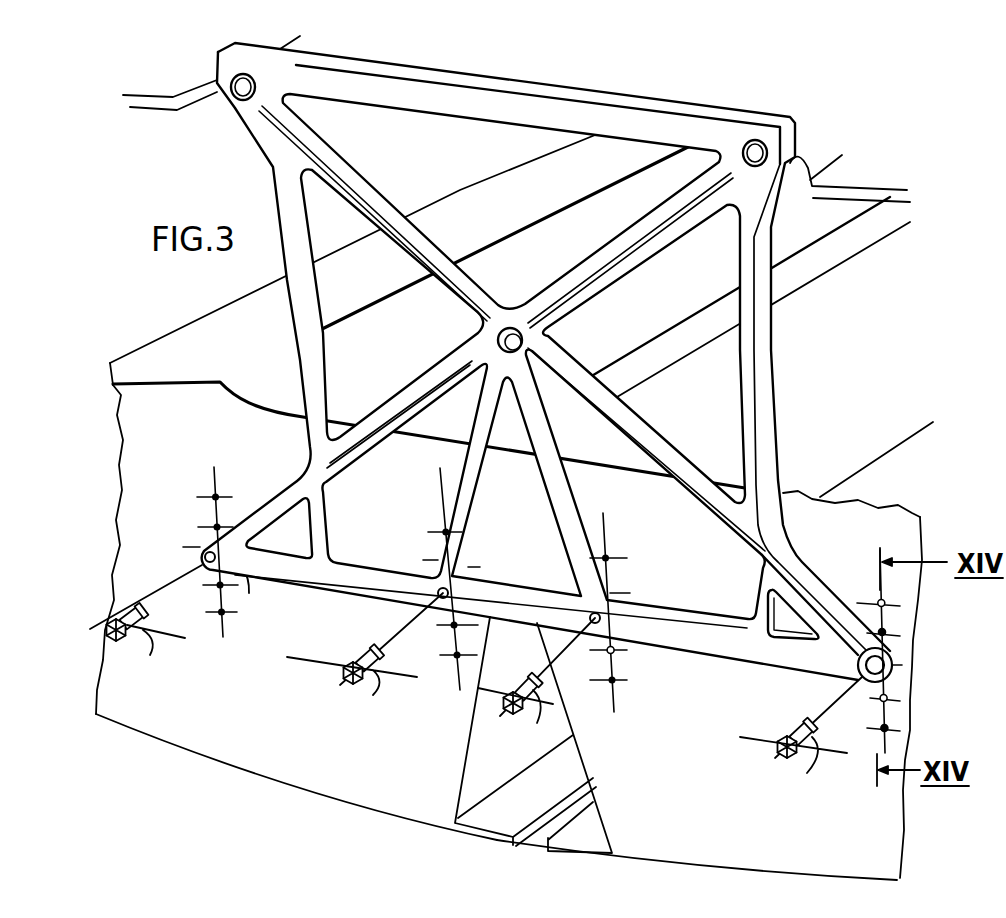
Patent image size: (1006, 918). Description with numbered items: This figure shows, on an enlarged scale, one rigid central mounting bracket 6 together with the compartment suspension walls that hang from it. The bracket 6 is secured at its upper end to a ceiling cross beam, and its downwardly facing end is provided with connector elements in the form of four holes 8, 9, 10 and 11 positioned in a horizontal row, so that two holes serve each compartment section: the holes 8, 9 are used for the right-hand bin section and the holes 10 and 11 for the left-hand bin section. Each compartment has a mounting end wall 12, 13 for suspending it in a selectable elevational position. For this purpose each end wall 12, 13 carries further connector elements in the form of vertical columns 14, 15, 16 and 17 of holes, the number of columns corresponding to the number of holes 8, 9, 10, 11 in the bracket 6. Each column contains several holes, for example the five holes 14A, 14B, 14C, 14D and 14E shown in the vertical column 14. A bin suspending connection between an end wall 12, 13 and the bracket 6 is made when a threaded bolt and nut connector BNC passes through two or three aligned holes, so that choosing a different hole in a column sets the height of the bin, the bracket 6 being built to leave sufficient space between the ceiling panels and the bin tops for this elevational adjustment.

The central mounting bracket 6 is at (770, 381).
The connector element hole 8 is at (862, 674).
The connector element hole 9 is at (603, 622).
The connector element hole 10 is at (440, 597).
The connector element hole 11 is at (234, 589).
The mounting end wall 12 is at (883, 820).
The mounting end wall 13 is at (117, 703).
The vertical column of holes 14 is at (860, 579).
The mounting hole 14A is at (886, 605).
The mounting hole 14B is at (886, 633).
The mounting hole 14C is at (893, 663).
The mounting hole 14D is at (888, 700).
The mounting hole 14E is at (888, 730).
The vertical column of holes 15 is at (619, 527).
The vertical column of holes 16 is at (431, 511).
The vertical column of holes 17 is at (189, 474).
The threaded bolt and nut connector BNC is at (476, 688).